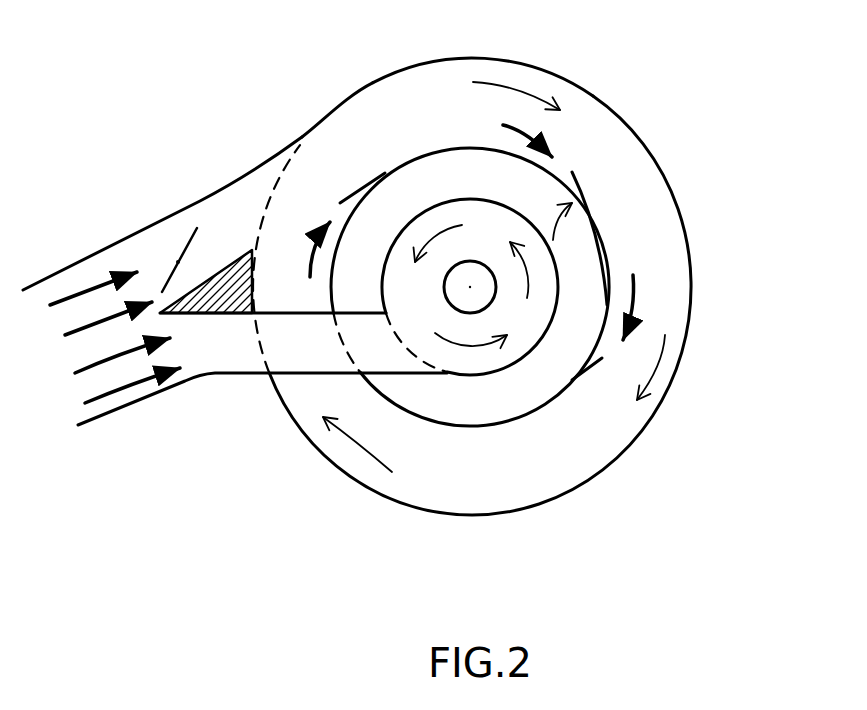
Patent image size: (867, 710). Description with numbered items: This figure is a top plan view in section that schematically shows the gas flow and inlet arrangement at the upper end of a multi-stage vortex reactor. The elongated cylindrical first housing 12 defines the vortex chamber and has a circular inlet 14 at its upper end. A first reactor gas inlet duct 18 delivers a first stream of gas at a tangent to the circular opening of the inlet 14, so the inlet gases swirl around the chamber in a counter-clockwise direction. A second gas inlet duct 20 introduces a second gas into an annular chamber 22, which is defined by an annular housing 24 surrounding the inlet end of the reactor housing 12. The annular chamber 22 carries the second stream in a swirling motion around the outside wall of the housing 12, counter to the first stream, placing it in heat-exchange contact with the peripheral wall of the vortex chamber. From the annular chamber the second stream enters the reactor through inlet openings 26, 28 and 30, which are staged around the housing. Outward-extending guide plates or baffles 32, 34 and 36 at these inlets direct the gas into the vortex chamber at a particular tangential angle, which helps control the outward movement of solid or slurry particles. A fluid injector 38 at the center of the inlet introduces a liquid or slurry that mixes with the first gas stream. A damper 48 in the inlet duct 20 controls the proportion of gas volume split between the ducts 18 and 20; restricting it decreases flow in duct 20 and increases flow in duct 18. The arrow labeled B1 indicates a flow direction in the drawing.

The first housing 12 is at (475, 148).
The inlet 14 is at (398, 318).
The first reactor gas inlet duct 18 is at (237, 357).
The second gas inlet duct 20 is at (235, 184).
The annular chamber 22 is at (688, 253).
The annular housing 24 is at (593, 97).
The inlet opening 26 is at (602, 218).
The inlet opening 28 is at (557, 407).
The inlet opening 30 is at (392, 168).
The guide plate 32 is at (592, 205).
The guide plate 34 is at (580, 380).
The guide plate 36 is at (373, 180).
The fluid injector 38 is at (470, 298).
The damper 48 is at (163, 270).
The flow direction B1 is at (585, 185).